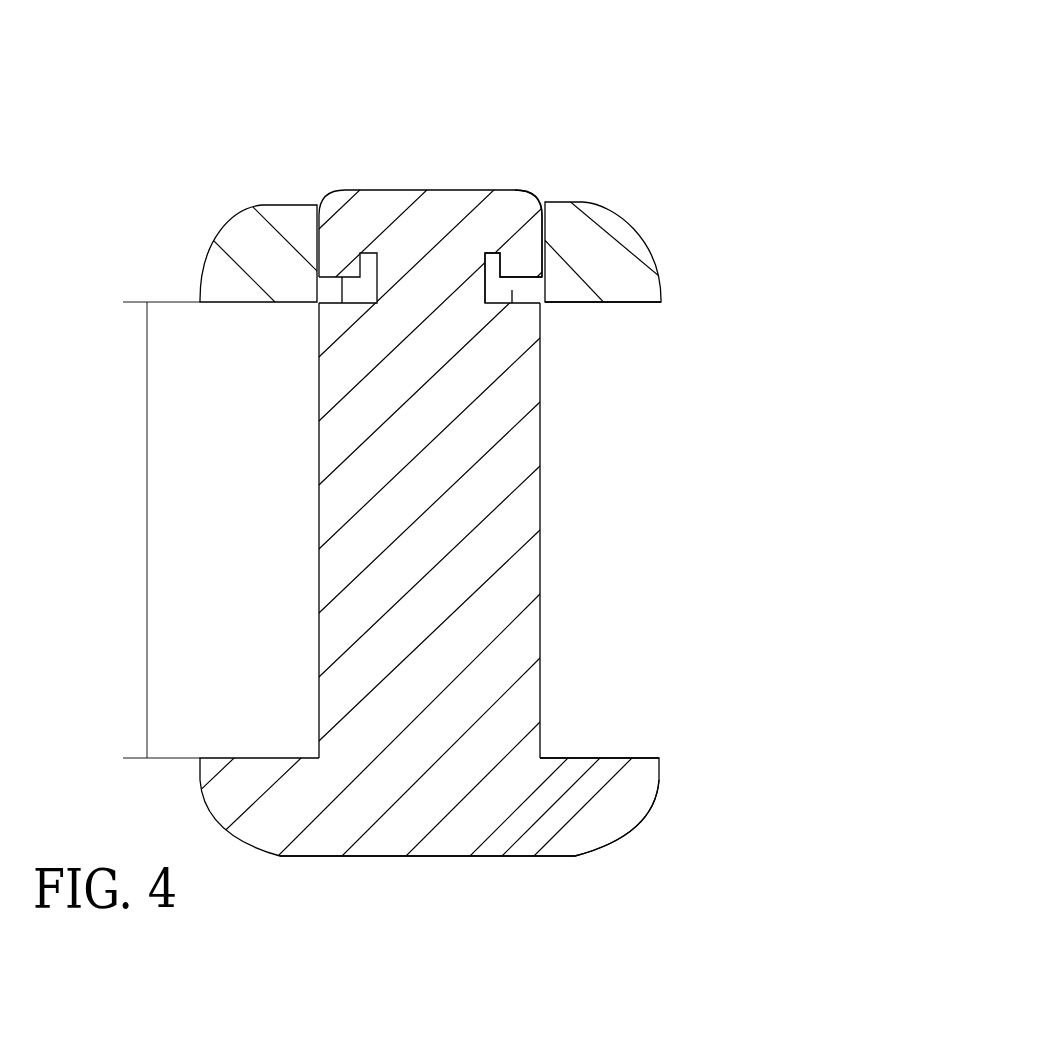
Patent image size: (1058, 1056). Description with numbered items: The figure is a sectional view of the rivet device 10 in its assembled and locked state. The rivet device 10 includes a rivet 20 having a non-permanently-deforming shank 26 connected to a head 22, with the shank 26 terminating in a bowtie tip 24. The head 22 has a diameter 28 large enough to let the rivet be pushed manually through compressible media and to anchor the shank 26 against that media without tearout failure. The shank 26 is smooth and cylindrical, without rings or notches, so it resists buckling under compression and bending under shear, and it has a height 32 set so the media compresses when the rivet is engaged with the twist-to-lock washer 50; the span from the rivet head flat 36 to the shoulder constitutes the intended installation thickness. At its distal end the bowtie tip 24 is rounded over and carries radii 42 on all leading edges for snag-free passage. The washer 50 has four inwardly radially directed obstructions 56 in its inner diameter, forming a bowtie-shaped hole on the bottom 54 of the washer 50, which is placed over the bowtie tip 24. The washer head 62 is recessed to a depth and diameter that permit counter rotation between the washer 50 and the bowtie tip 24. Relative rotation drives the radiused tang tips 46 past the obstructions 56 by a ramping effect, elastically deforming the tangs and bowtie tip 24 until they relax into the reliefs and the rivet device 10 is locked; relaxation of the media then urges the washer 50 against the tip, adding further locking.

The rivet device 10 is at (648, 466).
The rivet 20 is at (640, 870).
The head 22 is at (432, 860).
The bowtie tip 24 is at (428, 190).
The shank 26 is at (540, 550).
The head diameter 28 is at (660, 759).
The shank height 32 is at (145, 535).
The rivet head flat 36 is at (620, 755).
The radii 42 is at (523, 195).
The tang tips 46 is at (343, 300).
The twist-to-lock washer 50 is at (658, 203).
The washer bottom 54 is at (620, 303).
The obstructions 56 is at (512, 290).
The washer head 62 is at (297, 200).